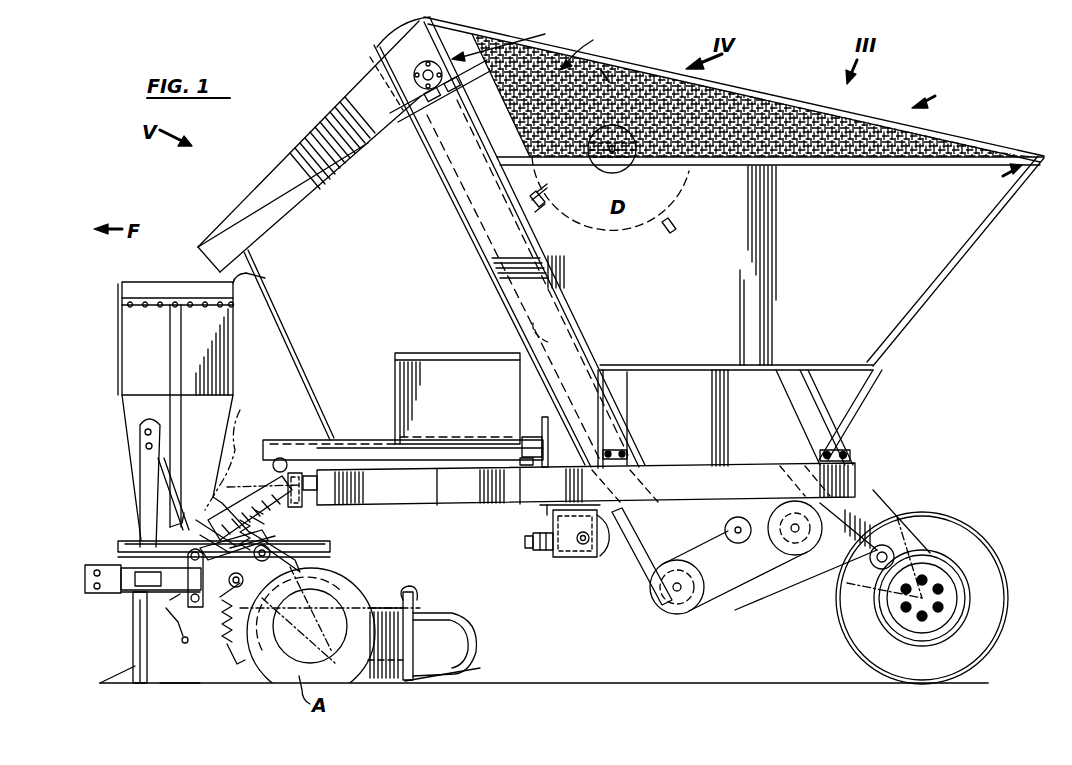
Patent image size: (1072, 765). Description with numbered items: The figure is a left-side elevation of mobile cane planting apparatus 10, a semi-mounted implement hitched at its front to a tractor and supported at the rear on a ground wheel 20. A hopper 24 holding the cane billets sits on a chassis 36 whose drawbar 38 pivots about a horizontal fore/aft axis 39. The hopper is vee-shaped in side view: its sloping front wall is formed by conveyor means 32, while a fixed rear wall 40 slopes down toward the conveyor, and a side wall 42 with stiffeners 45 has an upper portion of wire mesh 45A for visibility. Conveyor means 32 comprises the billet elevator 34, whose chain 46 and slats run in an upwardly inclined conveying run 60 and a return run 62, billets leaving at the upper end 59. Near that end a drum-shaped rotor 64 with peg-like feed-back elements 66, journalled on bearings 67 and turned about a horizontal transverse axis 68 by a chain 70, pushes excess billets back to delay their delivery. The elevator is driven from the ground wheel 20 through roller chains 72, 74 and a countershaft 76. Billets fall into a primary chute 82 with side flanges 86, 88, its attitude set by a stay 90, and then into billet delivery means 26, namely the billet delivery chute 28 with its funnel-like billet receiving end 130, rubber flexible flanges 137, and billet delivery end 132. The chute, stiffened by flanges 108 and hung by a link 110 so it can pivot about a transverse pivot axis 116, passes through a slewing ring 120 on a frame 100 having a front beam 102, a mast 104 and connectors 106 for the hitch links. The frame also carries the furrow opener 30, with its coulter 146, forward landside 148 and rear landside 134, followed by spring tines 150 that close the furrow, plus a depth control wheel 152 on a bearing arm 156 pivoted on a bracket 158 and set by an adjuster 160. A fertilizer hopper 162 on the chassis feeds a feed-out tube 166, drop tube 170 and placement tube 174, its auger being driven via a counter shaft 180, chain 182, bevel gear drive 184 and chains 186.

The mobile cane planting apparatus 10 is at (940, 96).
The ground wheel 20 is at (980, 532).
The hopper 24 is at (1043, 155).
The billet delivery means 26 is at (163, 272).
The billet delivery chute 28 is at (252, 279).
The furrow opener 30 is at (130, 649).
The conveyor means 32 is at (400, 49).
The billet elevator 34 is at (583, 318).
The chassis 36 is at (691, 467).
The drawbar 38 is at (312, 498).
The horizontal fore/aft axis 39 is at (231, 488).
The rear wall 40 is at (928, 320).
The side wall 42 is at (932, 290).
The stiffeners 45 is at (648, 365).
The wire mesh 45A is at (765, 108).
The chain 46 is at (547, 349).
The upper end of conveying run 59 is at (512, 41).
The conveying run 60 is at (572, 296).
The return run 62 is at (578, 318).
The rotor 64 is at (609, 57).
The feed-back elements 66 is at (540, 212).
The bearings 67 is at (622, 165).
The horizontal transverse axis 68 is at (600, 162).
The chain 70 is at (469, 76).
The roller chain 72 is at (816, 564).
The roller chain 74 is at (705, 602).
The countershaft 76 is at (783, 547).
The primary chute 82 is at (268, 171).
The side flange 86 is at (262, 236).
The side flange 88 is at (282, 197).
The stay 90 is at (293, 360).
The frame 100 is at (222, 628).
The front beam 102 is at (133, 596).
The mast 104 is at (145, 489).
The connectors 106 is at (107, 563).
The stiffening flanges 108 is at (170, 372).
The link 110 is at (176, 488).
The transverse pivot axis 116 is at (180, 512).
The slewing ring 120 is at (333, 545).
The billet receiving end 130 is at (256, 305).
The billet delivery end 132 is at (402, 648).
The skid 134 is at (470, 681).
The flexible flanges 137 is at (121, 284).
The coulter 146 is at (135, 684).
The forward landside 148 is at (183, 684).
The spring tines 150 is at (470, 640).
The depth control wheel 152 is at (368, 572).
The bearing arm 156 is at (324, 560).
The bracket 158 is at (168, 614).
The adjuster 160 is at (176, 630).
The fertilizer hopper 162 is at (395, 375).
The fertilizer feed-out tube 166 is at (346, 440).
The drop tube 170 is at (330, 566).
The placement tube 174 is at (228, 641).
The counter shaft 180 is at (563, 558).
The chain 182 is at (608, 570).
The bevel gear drive 184 is at (530, 546).
The chains 186 is at (548, 515).